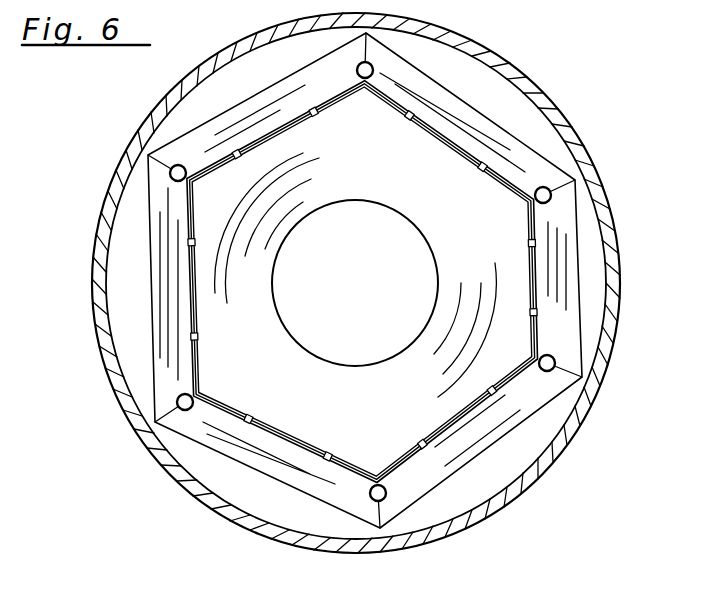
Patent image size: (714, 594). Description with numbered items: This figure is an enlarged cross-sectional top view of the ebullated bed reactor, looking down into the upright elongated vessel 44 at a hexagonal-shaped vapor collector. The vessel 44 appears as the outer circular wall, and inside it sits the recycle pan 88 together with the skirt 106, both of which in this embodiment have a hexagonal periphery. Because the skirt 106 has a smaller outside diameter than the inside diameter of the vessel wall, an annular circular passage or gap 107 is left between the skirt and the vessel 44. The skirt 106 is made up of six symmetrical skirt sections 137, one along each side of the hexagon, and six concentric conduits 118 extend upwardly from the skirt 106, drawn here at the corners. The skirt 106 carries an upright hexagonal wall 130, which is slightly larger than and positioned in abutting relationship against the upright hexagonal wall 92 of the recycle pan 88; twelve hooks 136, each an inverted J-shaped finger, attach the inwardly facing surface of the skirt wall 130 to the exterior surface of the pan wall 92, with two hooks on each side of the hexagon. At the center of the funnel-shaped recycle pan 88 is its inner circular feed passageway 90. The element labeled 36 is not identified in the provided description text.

The upright elongated vessel 44 is at (166, 100).
The annular circular passage or gap 107 is at (290, 70).
The skirt 106 is at (163, 212).
The skirt sections 137 is at (487, 122).
The upright wall of the skirt 130 is at (195, 348).
The upright wall of the recycle pan 92 is at (196, 353).
The clip 36 is at (194, 246).
The hook 136 is at (530, 321).
The conduits 118 is at (177, 167).
The inner circular feed passageway 90 is at (394, 279).
The recycle pan 88 is at (258, 321).